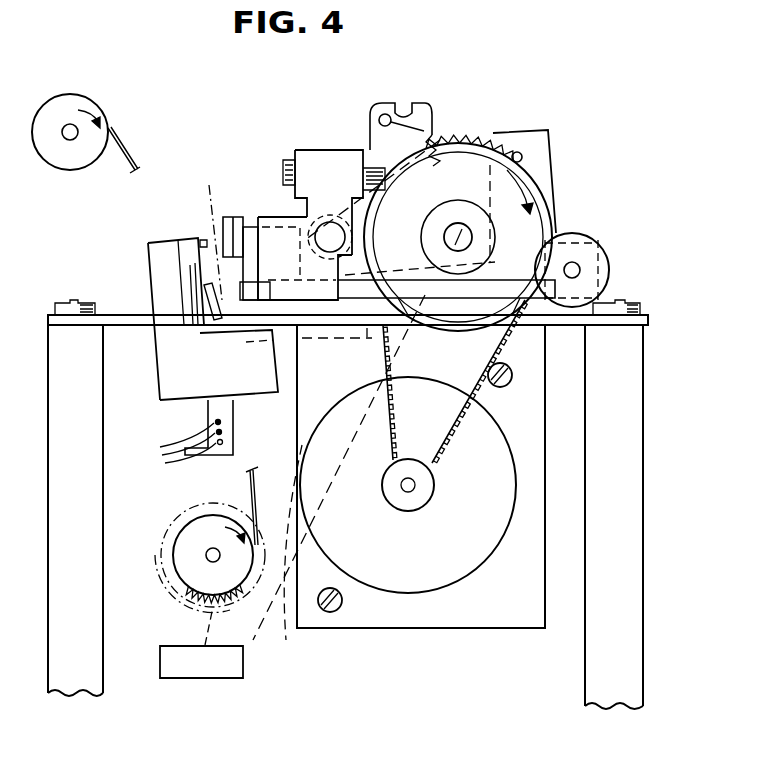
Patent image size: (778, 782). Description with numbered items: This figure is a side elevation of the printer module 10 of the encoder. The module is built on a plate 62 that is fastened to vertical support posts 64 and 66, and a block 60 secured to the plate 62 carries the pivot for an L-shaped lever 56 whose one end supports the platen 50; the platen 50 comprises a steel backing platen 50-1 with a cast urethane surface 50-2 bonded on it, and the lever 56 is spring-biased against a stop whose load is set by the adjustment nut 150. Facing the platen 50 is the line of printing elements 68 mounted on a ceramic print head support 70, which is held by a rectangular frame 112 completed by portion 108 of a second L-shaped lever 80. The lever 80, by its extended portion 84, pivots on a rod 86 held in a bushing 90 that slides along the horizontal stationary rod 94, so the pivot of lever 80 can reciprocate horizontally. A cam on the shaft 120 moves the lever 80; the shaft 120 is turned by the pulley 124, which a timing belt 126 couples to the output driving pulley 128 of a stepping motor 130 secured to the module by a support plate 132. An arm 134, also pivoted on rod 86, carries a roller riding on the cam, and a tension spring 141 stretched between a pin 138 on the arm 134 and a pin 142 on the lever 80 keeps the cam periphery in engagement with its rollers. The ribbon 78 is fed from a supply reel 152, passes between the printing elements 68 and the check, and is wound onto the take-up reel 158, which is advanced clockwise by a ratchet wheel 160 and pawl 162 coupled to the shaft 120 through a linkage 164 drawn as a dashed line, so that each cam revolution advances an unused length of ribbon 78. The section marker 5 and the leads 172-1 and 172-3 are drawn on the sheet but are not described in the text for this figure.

The printer module 10 is at (519, 117).
The section line 5- 5 is at (185, 197).
The platen 50 is at (247, 225).
The steel backing platen 50-1 is at (238, 218).
The cast urethane surface 50-2 is at (222, 240).
The L-shaped lever 56 is at (490, 283).
The block 60 is at (291, 335).
The plate 62 is at (146, 327).
The support post 64 is at (96, 650).
The support post 66 is at (632, 657).
The line of printing elements 68 is at (202, 242).
The print head support 70 is at (185, 268).
The ribbon 78 is at (127, 142).
The L-shaped lever 80 is at (546, 133).
The extended portion 84 is at (355, 262).
The rod 86 is at (338, 148).
The bushing 90 is at (318, 165).
The stationary rod 94 is at (289, 160).
The portion 108 is at (195, 378).
The rectangular frame 112 is at (152, 249).
The shaft 120 is at (464, 224).
The pulley 124 is at (530, 196).
The timing belt 126 is at (488, 386).
The output driving pulley 128 is at (428, 496).
The stepping motor 130 is at (462, 578).
The support plate 132 is at (397, 628).
The arm 134 is at (416, 123).
The pin 138 is at (381, 115).
The tension spring 141 is at (425, 140).
The pin 142 is at (523, 160).
The adjustment nut 150 is at (592, 252).
The supply reel 152 is at (80, 102).
The take-up reel 158 is at (190, 530).
The ratchet wheel 160 is at (198, 603).
The pawl 162 is at (228, 680).
The linkage 164 is at (288, 647).
The terminal bracket 172-1 is at (185, 462).
The wires 172-3 is at (180, 446).